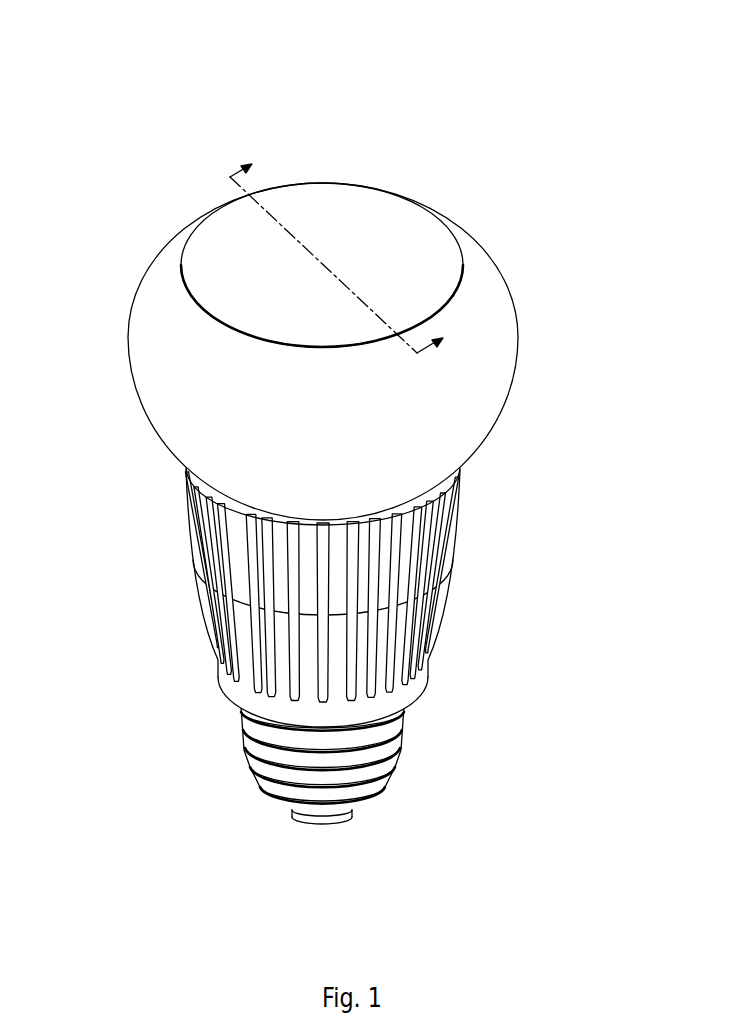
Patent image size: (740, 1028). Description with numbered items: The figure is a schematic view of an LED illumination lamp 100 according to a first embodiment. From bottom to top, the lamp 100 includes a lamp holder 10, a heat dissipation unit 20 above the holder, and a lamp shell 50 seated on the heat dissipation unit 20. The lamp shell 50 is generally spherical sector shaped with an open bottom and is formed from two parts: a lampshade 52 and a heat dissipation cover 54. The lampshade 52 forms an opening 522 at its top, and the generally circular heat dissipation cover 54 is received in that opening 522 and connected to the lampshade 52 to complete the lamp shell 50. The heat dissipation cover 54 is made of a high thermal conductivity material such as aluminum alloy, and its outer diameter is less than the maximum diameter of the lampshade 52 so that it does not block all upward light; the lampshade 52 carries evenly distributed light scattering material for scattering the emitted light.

The LED illumination lamp 100 is at (350, 55).
The lamp holder 10 is at (242, 732).
The heat dissipation unit 20 is at (428, 583).
The lamp shell 50 is at (627, 222).
The lampshade 52 is at (468, 308).
The heat dissipation cover 54 is at (420, 243).
The opening 522 is at (183, 265).